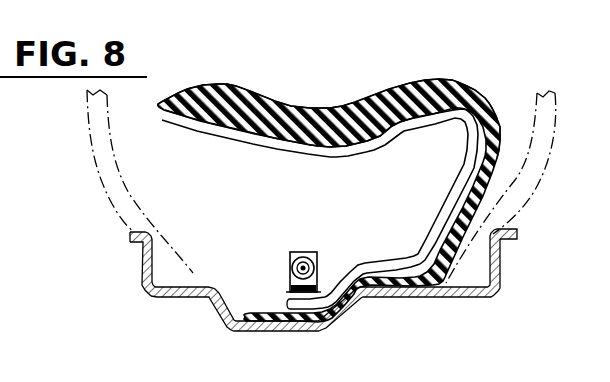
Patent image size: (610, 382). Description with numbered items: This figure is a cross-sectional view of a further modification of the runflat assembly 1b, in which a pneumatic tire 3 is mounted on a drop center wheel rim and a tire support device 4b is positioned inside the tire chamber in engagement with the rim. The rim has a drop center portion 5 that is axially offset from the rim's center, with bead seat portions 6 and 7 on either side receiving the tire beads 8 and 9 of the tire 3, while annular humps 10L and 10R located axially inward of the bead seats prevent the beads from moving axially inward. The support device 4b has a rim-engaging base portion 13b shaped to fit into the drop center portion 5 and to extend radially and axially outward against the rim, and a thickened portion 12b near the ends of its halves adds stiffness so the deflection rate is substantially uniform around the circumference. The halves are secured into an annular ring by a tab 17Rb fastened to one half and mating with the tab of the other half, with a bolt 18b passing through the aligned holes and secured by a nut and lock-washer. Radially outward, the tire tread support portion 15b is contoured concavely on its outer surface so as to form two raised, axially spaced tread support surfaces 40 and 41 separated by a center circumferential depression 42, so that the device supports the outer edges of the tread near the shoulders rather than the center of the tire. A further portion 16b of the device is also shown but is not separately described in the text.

The assembly 1b is at (357, 322).
The pneumatic tire 3 is at (529, 197).
The tire support device 4b is at (489, 96).
The drop center portion 5 is at (288, 332).
The bead seat portion 6 is at (175, 297).
The bead seat portion 7 is at (473, 282).
The tire bead 8 is at (167, 267).
The tire bead 9 is at (483, 265).
The annular hump 10L is at (213, 284).
The annular hump 10R is at (440, 287).
The thickened portion 12b is at (288, 300).
The rim-engaging base portion 13b is at (258, 331).
The tire tread support portion 15b is at (180, 94).
The panel end 16b is at (502, 132).
The tab 17Rb is at (318, 253).
The bolt 18b is at (300, 260).
The tread support surface 40 is at (208, 83).
The tread support surface 41 is at (447, 80).
The center circumferential depression 42 is at (331, 107).